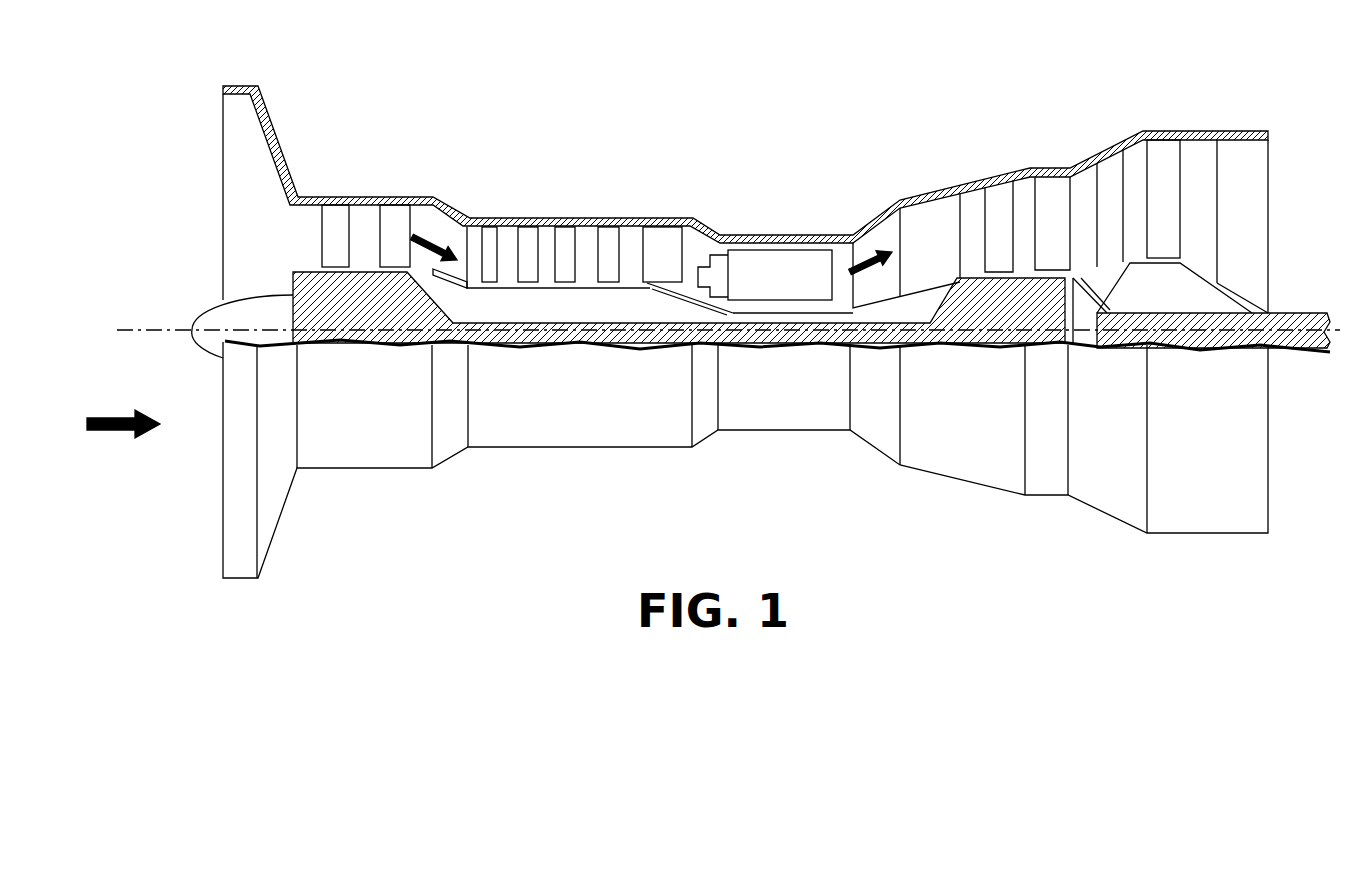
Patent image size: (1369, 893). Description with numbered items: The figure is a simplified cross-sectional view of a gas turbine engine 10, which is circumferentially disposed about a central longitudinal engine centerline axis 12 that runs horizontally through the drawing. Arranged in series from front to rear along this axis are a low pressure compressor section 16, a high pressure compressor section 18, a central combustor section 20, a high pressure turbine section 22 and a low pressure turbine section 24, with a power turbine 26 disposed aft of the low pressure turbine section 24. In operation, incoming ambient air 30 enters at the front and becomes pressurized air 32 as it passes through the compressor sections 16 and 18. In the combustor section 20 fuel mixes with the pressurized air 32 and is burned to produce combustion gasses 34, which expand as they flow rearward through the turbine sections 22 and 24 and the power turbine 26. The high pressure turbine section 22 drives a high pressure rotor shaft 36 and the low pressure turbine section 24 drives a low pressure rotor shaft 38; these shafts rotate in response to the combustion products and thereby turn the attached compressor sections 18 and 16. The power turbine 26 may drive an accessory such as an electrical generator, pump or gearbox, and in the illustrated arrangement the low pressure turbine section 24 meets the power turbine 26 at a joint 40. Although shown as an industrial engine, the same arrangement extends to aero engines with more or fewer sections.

The gas turbine engine 10 is at (850, 80).
The engine centerline axis 12 is at (160, 330).
The low pressure compressor section 16 is at (359, 174).
The high pressure compressor section 18 is at (601, 186).
The combustor section 20 is at (758, 275).
The high pressure turbine section 22 is at (952, 157).
The low pressure turbine section 24 is at (1032, 150).
The power turbine 26 is at (1215, 127).
The incoming ambient air 30 is at (120, 416).
The pressurized air 32 is at (438, 254).
The combustion gasses 34 is at (862, 256).
The high pressure rotor shaft 36 is at (673, 296).
The low pressure rotor shaft 38 is at (447, 306).
The joint 40 is at (1099, 139).